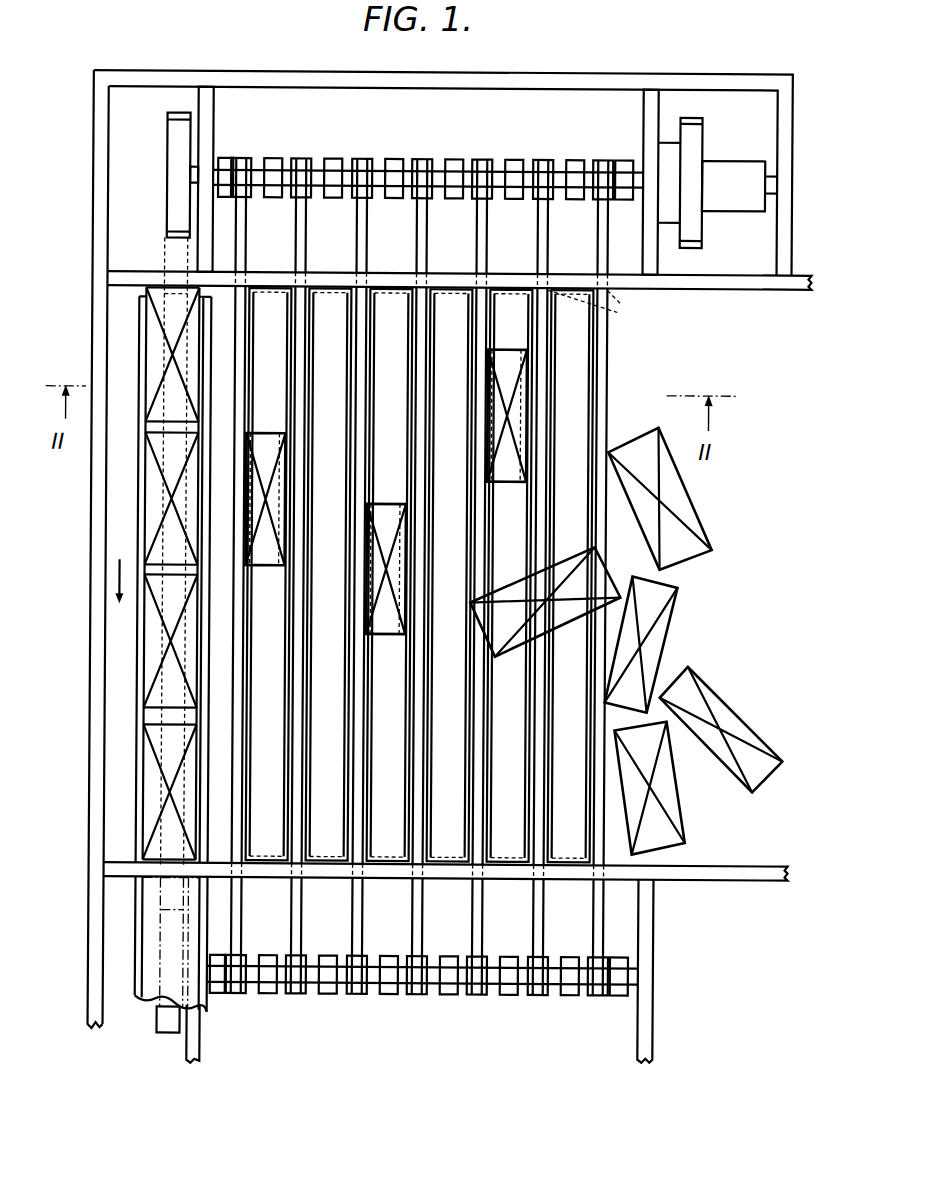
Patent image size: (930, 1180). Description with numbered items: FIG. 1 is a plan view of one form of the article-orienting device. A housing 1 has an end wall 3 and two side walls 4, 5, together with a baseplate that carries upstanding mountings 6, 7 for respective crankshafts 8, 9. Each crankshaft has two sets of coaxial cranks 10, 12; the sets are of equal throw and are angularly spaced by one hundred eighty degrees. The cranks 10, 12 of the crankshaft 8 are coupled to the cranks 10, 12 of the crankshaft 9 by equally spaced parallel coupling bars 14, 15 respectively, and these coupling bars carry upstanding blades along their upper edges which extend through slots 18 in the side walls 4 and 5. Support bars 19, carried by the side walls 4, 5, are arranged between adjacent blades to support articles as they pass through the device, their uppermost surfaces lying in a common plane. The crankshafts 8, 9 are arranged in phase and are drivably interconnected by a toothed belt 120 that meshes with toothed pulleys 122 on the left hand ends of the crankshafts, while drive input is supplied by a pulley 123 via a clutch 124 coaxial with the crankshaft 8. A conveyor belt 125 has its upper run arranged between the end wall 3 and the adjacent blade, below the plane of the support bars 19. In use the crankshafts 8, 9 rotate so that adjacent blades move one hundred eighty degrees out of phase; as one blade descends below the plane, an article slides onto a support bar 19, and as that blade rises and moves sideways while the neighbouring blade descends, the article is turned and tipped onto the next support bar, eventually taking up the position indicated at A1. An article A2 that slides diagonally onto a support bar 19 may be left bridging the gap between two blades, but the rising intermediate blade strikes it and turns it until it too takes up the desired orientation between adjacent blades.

The housing 1 is at (88, 636).
The end wall 3 is at (92, 580).
The side wall 4 is at (748, 287).
The side wall 5 is at (770, 864).
The upstanding mounting 6 is at (205, 103).
The upstanding mounting 7 is at (660, 1034).
The crankshaft 8 is at (499, 152).
The crankshaft 9 is at (496, 998).
The cranks 10 is at (260, 171).
The cranks 12 is at (320, 171).
The coupling bars 14 is at (244, 204).
The coupling bars 15 is at (301, 245).
The slots 18 is at (596, 308).
The support bars 19 is at (281, 335).
The toothed belt 120 is at (170, 252).
The toothed pulleys 122 is at (165, 1021).
The pulley 123 is at (693, 130).
The clutch 124 is at (748, 192).
The conveyor belt 125 is at (140, 478).
The article A1 is at (523, 388).
The article A2 is at (655, 597).